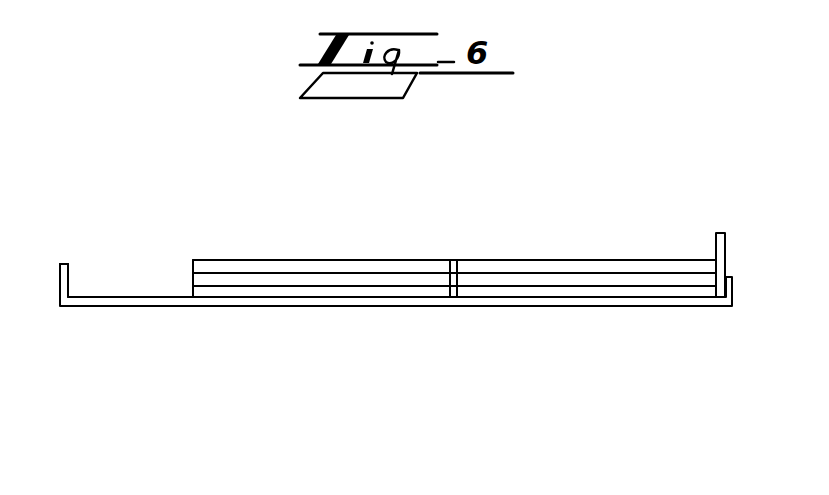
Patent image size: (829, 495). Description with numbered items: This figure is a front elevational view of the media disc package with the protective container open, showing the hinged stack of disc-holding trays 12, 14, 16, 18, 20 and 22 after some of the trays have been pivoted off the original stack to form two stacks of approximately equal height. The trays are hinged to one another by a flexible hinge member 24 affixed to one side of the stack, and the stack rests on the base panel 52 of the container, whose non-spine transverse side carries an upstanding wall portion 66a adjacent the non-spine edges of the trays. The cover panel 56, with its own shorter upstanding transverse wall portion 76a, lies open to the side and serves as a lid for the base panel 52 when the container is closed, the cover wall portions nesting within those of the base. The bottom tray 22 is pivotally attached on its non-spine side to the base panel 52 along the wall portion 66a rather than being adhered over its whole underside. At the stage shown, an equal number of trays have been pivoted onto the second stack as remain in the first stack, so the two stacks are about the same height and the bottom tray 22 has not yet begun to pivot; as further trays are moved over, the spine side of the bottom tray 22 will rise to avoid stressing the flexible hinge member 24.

The disc-holding tray 12 is at (208, 295).
The disc-holding tray 14 is at (270, 279).
The disc-holding tray 16 is at (335, 262).
The disc-holding tray 18 is at (597, 264).
The disc-holding tray 20 is at (543, 280).
The bottom tray 22 is at (500, 293).
The flexible hinge member 24 is at (453, 260).
The base panel 52 is at (600, 307).
The cover panel 56 is at (140, 304).
The transverse side wall portion 66a is at (725, 243).
The transverse side wall portion 76a is at (60, 272).